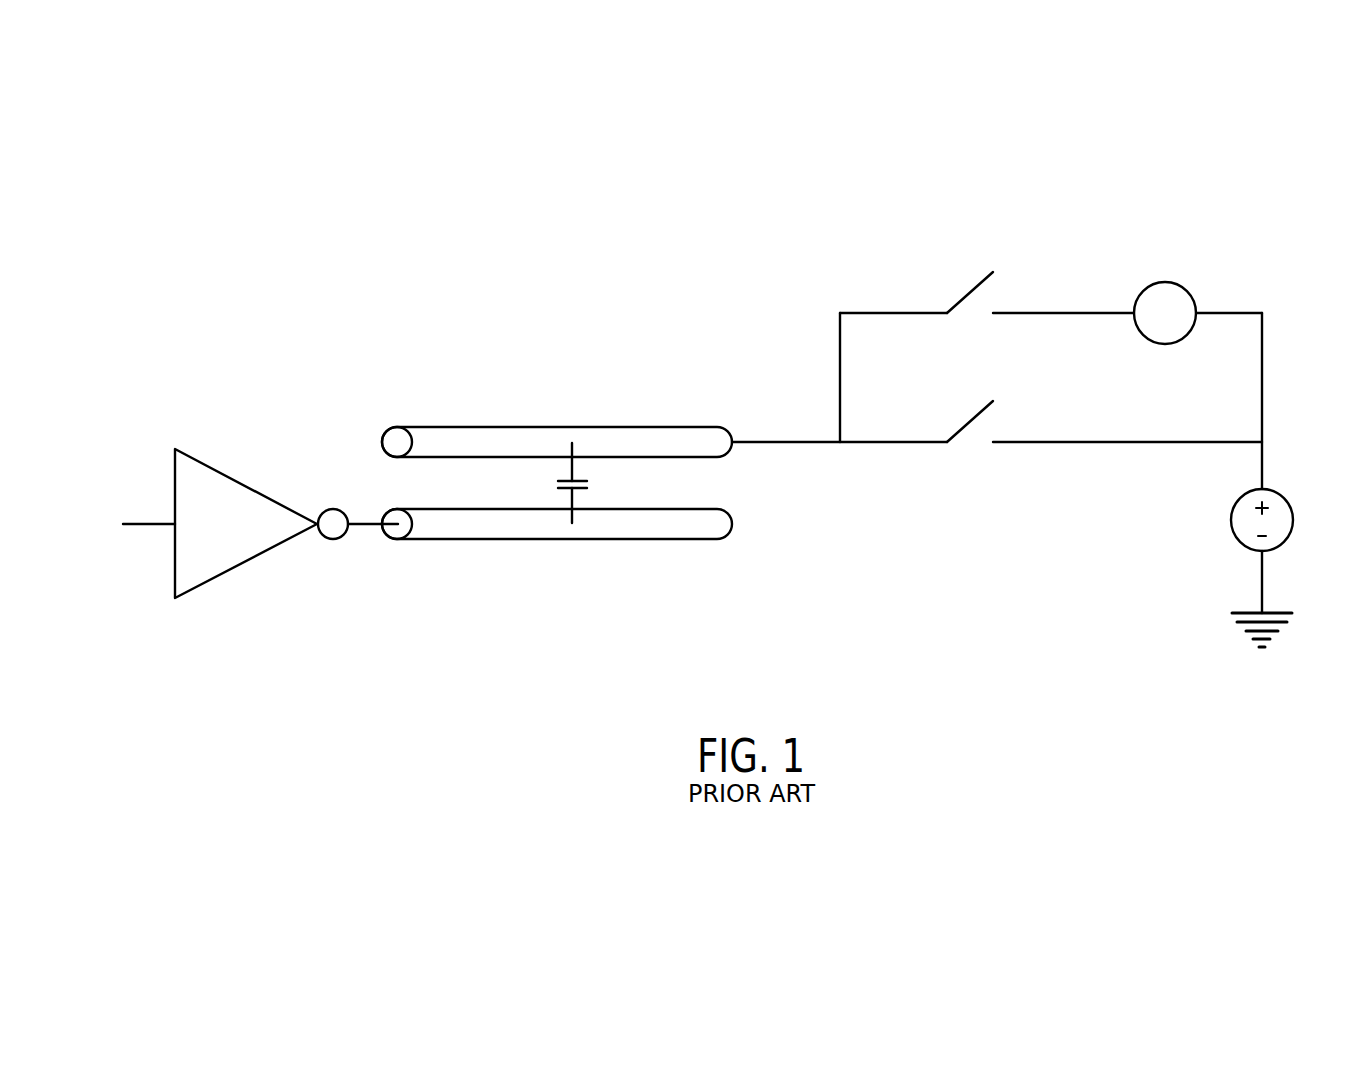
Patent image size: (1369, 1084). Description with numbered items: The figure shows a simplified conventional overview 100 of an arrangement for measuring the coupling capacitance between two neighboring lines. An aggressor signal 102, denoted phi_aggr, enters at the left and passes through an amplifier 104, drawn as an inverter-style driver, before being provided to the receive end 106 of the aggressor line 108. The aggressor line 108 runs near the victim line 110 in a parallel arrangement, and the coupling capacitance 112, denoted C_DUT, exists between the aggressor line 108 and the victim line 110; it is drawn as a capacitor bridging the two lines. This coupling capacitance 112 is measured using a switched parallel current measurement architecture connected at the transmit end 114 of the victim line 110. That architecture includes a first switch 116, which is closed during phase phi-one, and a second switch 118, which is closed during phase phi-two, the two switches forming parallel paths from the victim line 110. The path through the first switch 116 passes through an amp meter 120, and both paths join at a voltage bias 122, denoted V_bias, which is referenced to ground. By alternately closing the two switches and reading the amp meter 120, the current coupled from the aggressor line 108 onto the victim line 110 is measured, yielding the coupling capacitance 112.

The simplified conventional overview 100 is at (226, 271).
The aggressor signal 102 is at (88, 547).
The amplifier 104 is at (230, 570).
The receive end 106 is at (392, 508).
The aggressor line 108 is at (463, 575).
The victim line 110 is at (658, 392).
The coupling capacitance 112 is at (565, 477).
The transmit end 114 is at (715, 457).
The switch 1 116 is at (968, 292).
The switch 2 118 is at (968, 420).
The amp meter 120 is at (1168, 282).
The voltage bias 122 is at (1282, 492).